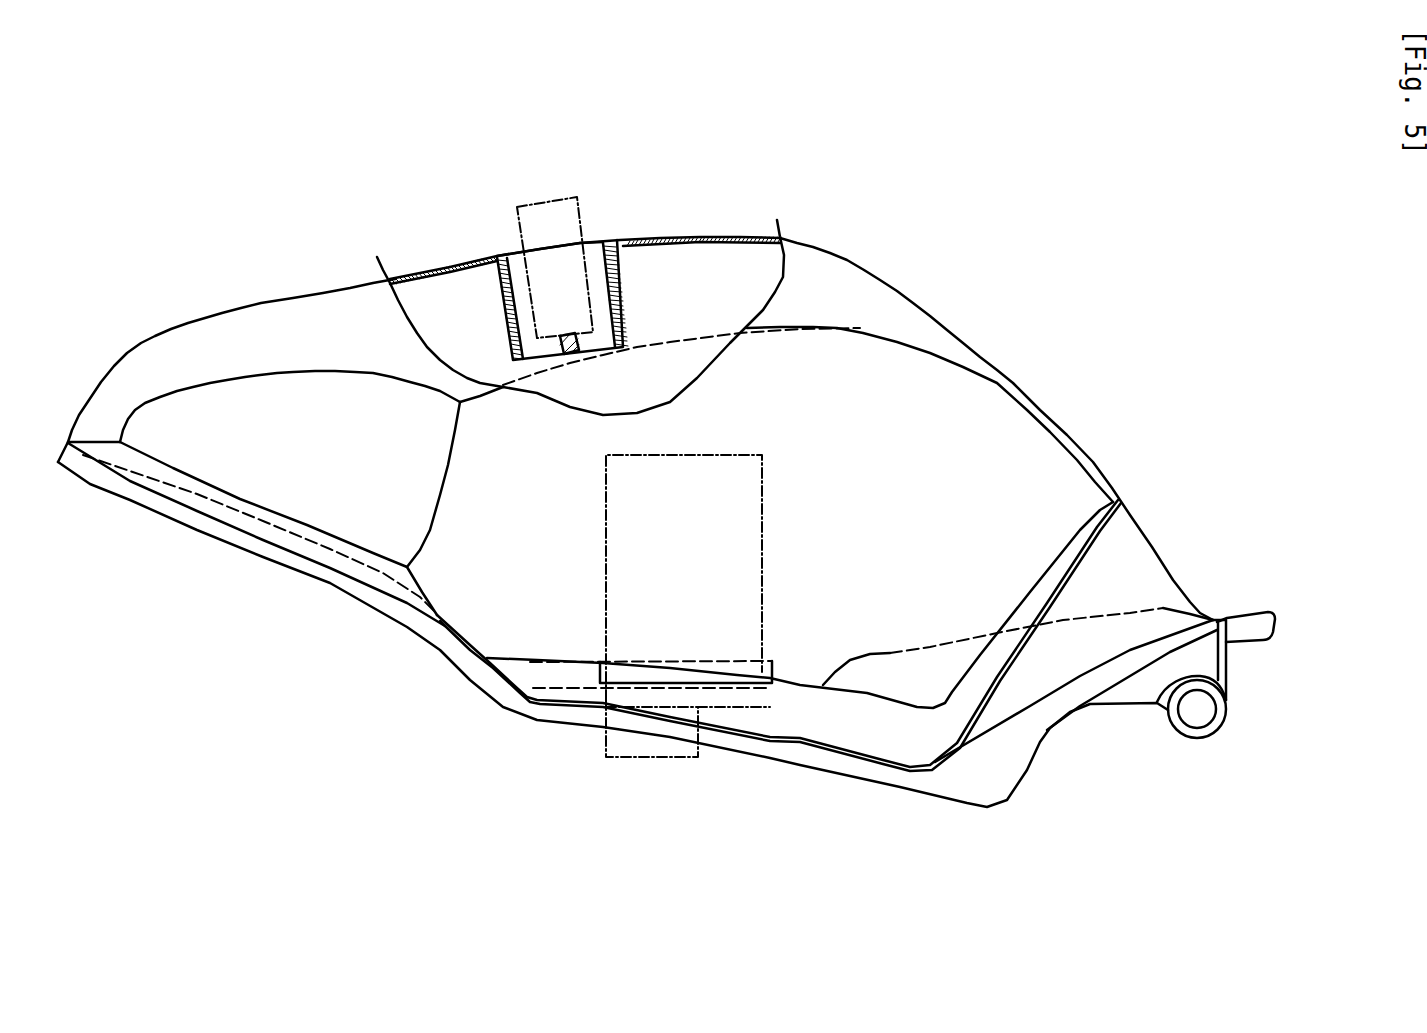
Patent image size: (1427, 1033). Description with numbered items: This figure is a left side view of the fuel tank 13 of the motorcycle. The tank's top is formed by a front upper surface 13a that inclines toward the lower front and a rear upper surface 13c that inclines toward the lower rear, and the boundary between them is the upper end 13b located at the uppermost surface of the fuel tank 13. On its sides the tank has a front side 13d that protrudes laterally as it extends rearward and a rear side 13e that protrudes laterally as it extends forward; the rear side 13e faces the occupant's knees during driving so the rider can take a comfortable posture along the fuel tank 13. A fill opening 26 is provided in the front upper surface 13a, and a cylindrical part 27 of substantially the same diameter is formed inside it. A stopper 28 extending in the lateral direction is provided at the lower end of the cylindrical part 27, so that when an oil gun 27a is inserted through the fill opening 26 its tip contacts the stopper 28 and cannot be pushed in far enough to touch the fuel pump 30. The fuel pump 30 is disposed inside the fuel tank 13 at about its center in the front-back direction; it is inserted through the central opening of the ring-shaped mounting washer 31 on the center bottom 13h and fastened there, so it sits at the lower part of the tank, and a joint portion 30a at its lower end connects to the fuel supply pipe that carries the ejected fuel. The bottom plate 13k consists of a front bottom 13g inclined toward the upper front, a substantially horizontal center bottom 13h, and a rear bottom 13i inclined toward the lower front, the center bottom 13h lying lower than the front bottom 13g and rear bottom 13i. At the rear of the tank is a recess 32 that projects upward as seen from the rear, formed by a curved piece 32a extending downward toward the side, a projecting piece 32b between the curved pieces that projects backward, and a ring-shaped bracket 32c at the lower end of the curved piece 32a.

The fuel tank 13 is at (745, 323).
The front upper surface 13a is at (259, 314).
The upper end 13b is at (585, 210).
The rear upper surface 13c is at (996, 429).
The front side 13d is at (278, 537).
The rear side 13e is at (748, 642).
The front bottom 13g is at (256, 576).
The center bottom 13h is at (630, 731).
The rear bottom 13i is at (635, 663).
The bottom plate 13k is at (256, 533).
The fill opening 26 is at (578, 225).
The cylindrical part 27 is at (605, 300).
The oil gun 27a is at (515, 216).
The stopper 28 is at (609, 369).
The fuel pump 30 is at (701, 529).
The joint portion 30a is at (688, 782).
The mounting washer 31 is at (726, 612).
The recess 32 is at (1191, 597).
The curved piece 32a is at (1076, 721).
The projecting piece 32b is at (1259, 579).
The ring-shaped bracket 32c is at (1233, 764).